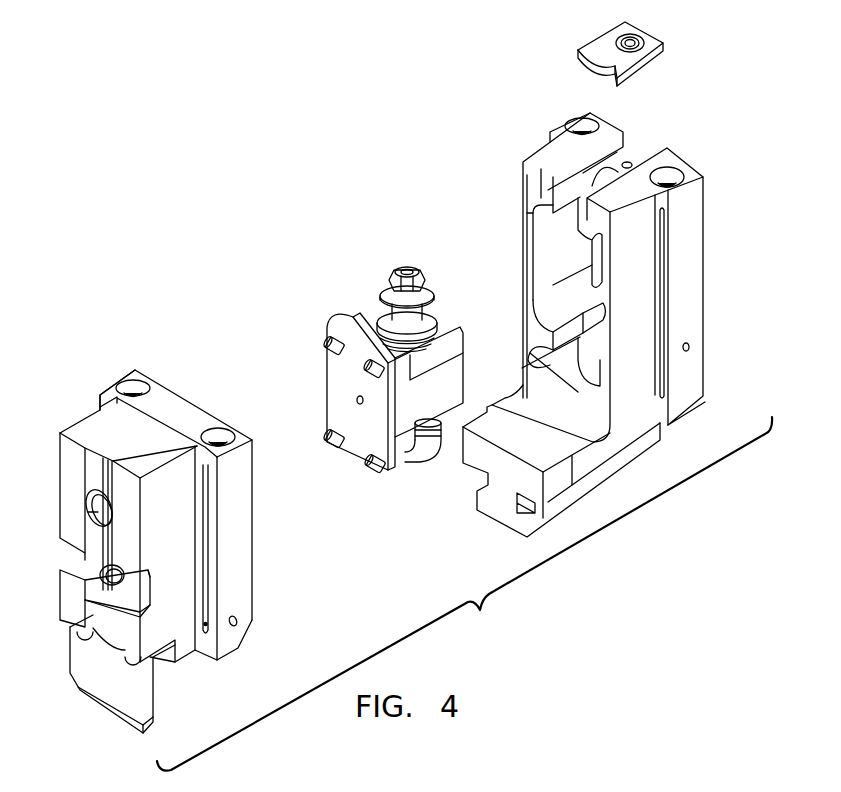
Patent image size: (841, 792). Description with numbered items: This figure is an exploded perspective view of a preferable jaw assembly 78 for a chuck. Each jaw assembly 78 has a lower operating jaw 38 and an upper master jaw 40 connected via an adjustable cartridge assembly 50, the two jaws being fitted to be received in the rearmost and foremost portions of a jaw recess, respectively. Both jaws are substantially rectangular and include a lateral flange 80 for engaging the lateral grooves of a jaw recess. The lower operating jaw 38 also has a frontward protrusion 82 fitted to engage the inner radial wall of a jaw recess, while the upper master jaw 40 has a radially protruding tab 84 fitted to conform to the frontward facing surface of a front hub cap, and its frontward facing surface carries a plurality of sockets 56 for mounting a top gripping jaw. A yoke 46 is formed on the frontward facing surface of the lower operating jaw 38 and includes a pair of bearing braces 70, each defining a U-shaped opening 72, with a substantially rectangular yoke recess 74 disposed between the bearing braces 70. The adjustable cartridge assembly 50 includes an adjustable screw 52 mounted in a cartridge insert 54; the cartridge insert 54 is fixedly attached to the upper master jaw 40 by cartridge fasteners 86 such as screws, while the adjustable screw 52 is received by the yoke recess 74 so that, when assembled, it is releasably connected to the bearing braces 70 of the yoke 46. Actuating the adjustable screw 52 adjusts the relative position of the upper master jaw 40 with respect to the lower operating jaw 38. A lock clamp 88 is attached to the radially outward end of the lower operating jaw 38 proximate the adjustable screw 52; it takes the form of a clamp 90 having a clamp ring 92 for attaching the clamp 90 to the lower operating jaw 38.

The lower operating jaw 38 is at (528, 172).
The upper master jaw 40 is at (72, 457).
The yoke 46 is at (545, 208).
The adjustable cartridge assembly 50 is at (338, 295).
The adjustable screw 52 is at (417, 317).
The cartridge insert 54 is at (345, 380).
The sockets 56 is at (100, 573).
The bearing braces 70 is at (550, 187).
The U-shaped opening 72 is at (610, 152).
The yoke recess 74 is at (560, 253).
The jaw assembly 78 is at (464, 594).
The lateral flange 80 is at (120, 373).
The frontward protrusion 82 is at (487, 458).
The radially protruding tab 84 is at (87, 657).
The cartridge fasteners 86 is at (340, 330).
The lock clamp 88 is at (578, 50).
The clamp 90 is at (647, 65).
The clamp ring 92 is at (643, 42).